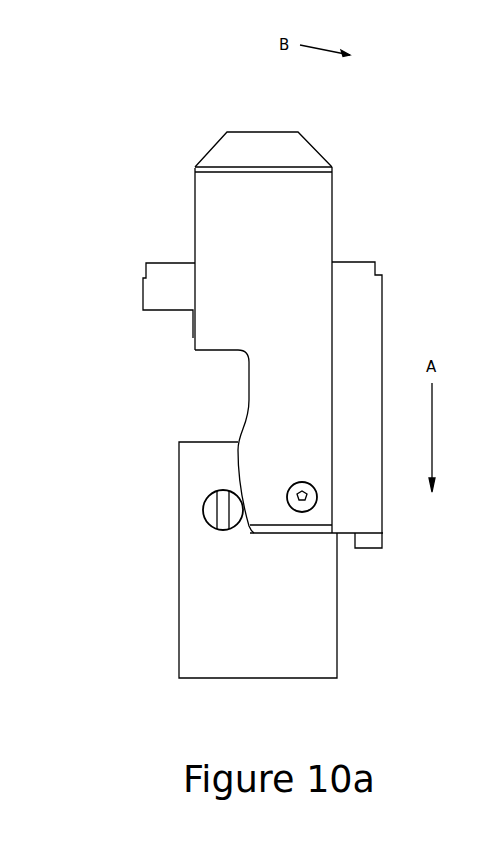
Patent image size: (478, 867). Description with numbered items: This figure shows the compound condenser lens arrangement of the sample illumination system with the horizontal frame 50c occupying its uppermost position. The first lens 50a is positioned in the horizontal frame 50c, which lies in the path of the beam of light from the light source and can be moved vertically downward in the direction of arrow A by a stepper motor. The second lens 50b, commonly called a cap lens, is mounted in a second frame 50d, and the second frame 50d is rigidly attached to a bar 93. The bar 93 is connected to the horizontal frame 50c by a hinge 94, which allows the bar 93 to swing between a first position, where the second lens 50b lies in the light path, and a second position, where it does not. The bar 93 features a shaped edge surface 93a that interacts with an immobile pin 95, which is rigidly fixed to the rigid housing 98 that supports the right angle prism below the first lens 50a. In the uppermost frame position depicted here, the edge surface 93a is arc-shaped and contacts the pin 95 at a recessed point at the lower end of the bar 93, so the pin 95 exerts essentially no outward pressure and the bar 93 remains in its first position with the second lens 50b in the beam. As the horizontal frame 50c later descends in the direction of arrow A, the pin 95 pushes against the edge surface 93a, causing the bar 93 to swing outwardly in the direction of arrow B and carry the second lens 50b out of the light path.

The first lens 50a is at (177, 262).
The second lens 50b is at (243, 135).
The horizontal frame 50c is at (345, 294).
The second frame 50d is at (195, 171).
The bar 93 is at (222, 220).
The shaped edge surface 93a is at (237, 465).
The hinge 94 is at (290, 508).
The immobile pin 95 is at (203, 523).
The rigid housing 98 is at (253, 650).